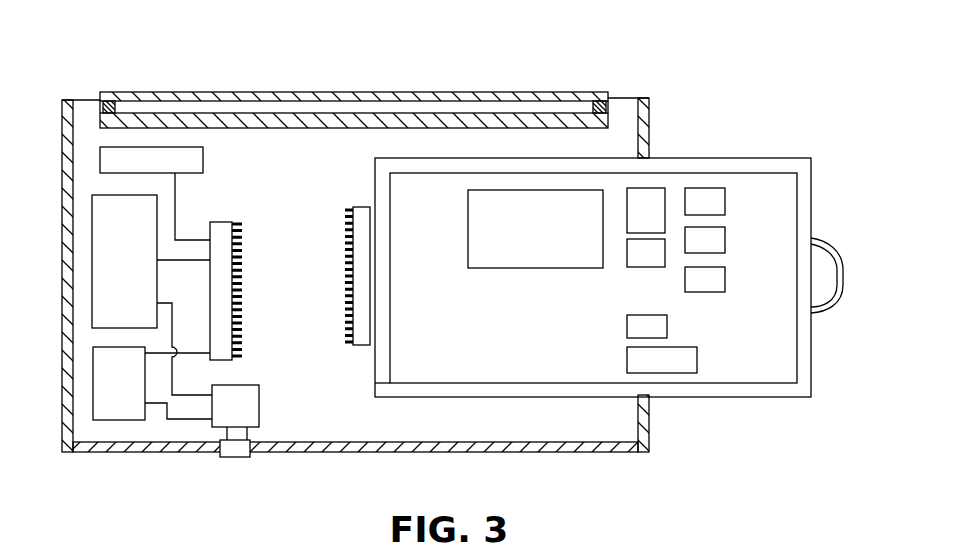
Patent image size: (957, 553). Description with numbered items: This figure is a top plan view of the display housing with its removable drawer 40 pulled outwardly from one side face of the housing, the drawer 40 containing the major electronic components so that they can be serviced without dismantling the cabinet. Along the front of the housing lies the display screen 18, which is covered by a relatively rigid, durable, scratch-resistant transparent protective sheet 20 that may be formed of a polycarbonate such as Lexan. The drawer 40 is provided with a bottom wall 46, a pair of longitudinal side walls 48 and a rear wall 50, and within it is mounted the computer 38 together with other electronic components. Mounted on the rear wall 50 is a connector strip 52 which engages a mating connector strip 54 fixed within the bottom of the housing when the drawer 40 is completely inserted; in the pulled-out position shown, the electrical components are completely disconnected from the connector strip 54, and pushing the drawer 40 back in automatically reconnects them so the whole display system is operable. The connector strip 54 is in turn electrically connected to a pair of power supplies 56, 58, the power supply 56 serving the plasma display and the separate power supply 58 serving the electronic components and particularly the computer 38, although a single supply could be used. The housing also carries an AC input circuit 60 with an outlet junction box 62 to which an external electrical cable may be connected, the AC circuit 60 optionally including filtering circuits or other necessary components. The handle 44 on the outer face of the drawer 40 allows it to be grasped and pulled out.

The display screen 18 is at (258, 120).
The transparent protective sheet 20 is at (335, 93).
The computer 38 is at (535, 268).
The drawer 40 is at (805, 212).
The handle 44 is at (845, 274).
The bottom wall 46 is at (782, 356).
The longitudinal side walls 48 is at (687, 171).
The rear wall 50 is at (375, 383).
The connector strip 52 is at (363, 292).
The mating connector strip 54 is at (220, 233).
The power supply 56 is at (92, 284).
The power supply 58 is at (93, 387).
The AC input circuit 60 is at (213, 428).
The outlet junction box 62 is at (235, 457).